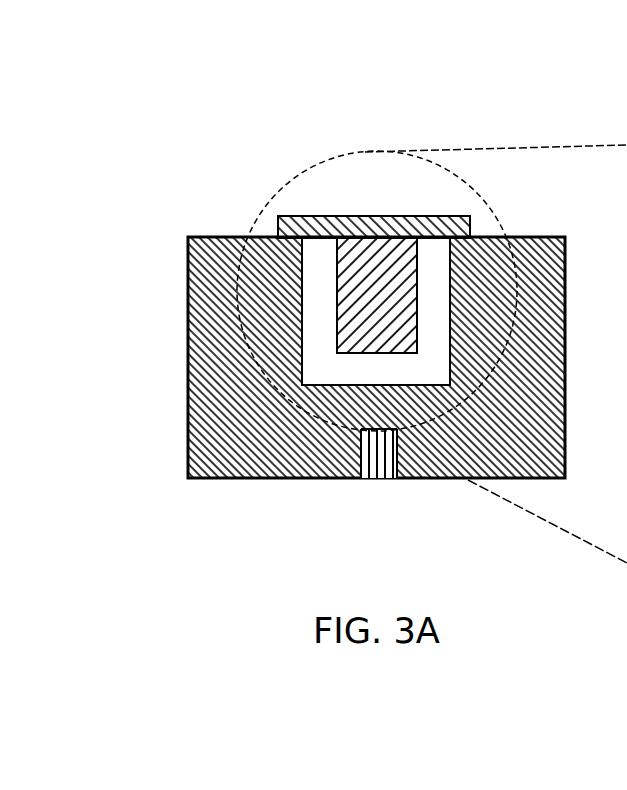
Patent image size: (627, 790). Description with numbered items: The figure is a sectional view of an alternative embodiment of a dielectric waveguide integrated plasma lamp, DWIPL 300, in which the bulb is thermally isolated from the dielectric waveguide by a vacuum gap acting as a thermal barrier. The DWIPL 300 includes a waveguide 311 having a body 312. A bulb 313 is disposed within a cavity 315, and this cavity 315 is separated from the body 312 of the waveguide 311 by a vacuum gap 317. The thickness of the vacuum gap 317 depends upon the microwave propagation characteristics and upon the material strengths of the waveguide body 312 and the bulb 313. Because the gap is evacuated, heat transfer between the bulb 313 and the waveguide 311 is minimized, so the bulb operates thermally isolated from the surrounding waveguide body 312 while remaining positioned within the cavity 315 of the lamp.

The DWIPL 300 is at (454, 109).
The waveguide 311 is at (182, 230).
The body 312 is at (190, 383).
The bulb 313 is at (368, 206).
The cavity 315 is at (315, 268).
The vacuum gap 317 is at (439, 261).